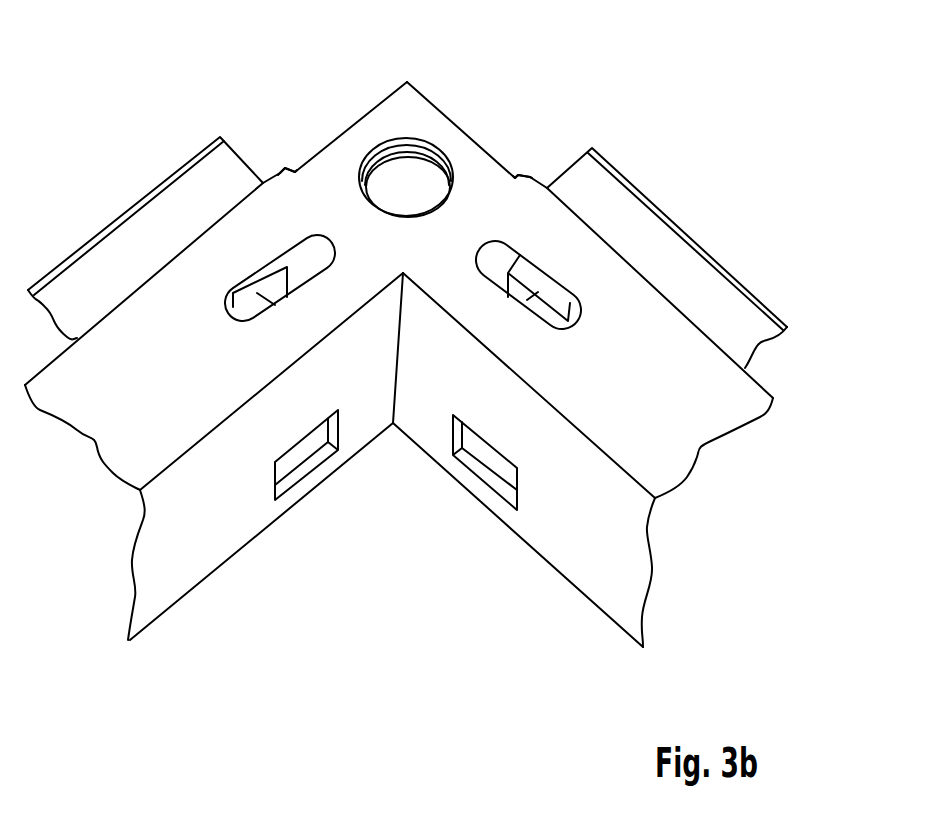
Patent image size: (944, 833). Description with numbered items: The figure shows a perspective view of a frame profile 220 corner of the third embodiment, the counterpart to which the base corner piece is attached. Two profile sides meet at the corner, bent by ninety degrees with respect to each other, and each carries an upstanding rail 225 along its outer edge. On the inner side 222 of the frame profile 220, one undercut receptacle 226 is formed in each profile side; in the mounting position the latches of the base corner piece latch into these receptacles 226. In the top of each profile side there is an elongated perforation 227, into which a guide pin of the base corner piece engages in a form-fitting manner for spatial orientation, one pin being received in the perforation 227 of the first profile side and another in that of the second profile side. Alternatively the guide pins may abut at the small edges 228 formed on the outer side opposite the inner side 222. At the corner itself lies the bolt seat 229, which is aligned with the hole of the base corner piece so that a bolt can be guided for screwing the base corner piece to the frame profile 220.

The frame profile 220 is at (404, 107).
The inner side 222 is at (220, 520).
The flange / upright rail 225 is at (155, 237).
The undercut receptacle 226 is at (302, 452).
The perforation 227 is at (305, 256).
The edge 228 is at (293, 172).
The bolt seat 229 is at (402, 177).